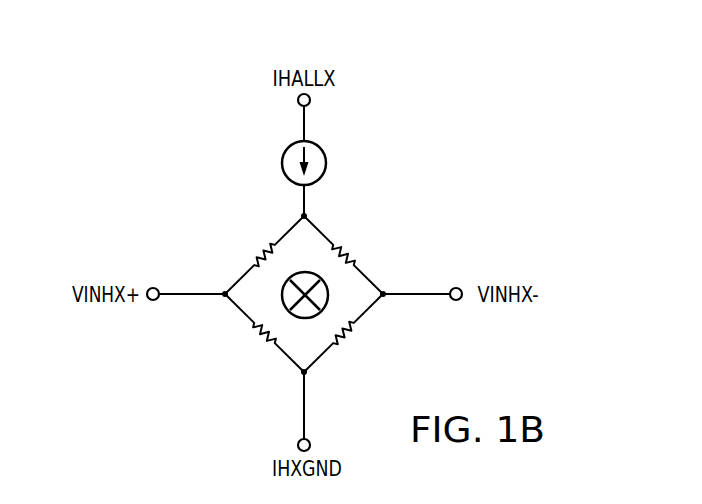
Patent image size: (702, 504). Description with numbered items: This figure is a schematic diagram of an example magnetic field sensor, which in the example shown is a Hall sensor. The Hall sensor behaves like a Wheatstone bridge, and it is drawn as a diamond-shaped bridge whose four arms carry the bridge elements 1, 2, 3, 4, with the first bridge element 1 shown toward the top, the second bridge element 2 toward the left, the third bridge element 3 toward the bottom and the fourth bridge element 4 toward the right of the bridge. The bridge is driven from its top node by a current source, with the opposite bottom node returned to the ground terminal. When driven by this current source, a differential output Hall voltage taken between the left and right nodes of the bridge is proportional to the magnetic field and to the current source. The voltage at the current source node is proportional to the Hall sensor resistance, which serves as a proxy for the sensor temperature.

The first Hall element contact 1 is at (307, 239).
The second Hall element contact 2 is at (245, 295).
The third Hall element contact 3 is at (307, 351).
The fourth Hall element contact 4 is at (366, 295).